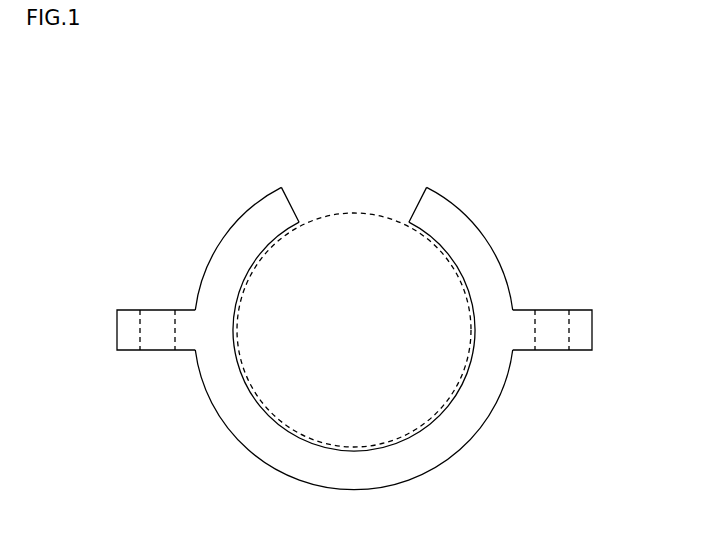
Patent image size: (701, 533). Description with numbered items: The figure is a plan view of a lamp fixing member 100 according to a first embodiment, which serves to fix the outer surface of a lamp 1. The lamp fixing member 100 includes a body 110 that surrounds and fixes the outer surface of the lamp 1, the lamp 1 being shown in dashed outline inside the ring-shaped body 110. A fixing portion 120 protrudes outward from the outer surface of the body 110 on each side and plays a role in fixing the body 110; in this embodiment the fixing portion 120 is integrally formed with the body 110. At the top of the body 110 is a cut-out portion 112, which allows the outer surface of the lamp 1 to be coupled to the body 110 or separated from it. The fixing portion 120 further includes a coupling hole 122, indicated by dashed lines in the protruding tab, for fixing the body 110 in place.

The lamp 1 is at (331, 213).
The lamp fixing member 100 is at (364, 293).
The body 110 is at (487, 268).
The cut-out portion 112 is at (348, 192).
The fixing portion 120 is at (364, 323).
The coupling hole 122 is at (559, 333).